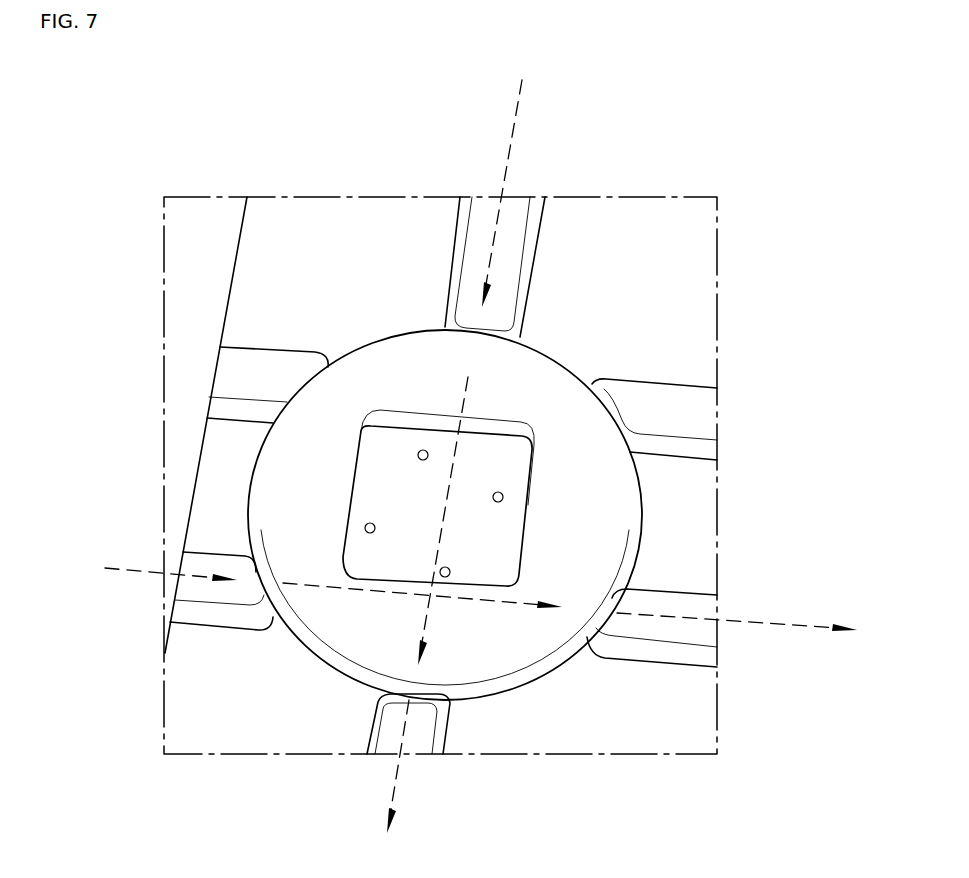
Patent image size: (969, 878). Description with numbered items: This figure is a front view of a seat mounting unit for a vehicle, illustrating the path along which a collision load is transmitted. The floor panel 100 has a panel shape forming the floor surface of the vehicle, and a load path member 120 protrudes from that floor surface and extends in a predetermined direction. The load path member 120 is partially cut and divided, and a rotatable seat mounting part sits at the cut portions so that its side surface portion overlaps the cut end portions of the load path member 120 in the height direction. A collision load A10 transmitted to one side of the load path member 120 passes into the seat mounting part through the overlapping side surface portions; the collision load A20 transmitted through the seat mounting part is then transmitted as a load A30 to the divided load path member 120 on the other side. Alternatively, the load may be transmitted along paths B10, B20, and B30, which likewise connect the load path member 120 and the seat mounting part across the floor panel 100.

The floor panel 100 is at (700, 718).
The load path member 120 is at (695, 412).
The collision load A10 is at (110, 568).
The collision load A20 is at (321, 588).
The load A30 is at (770, 620).
The path B10 is at (513, 128).
The path B20 is at (470, 387).
The path B30 is at (393, 797).